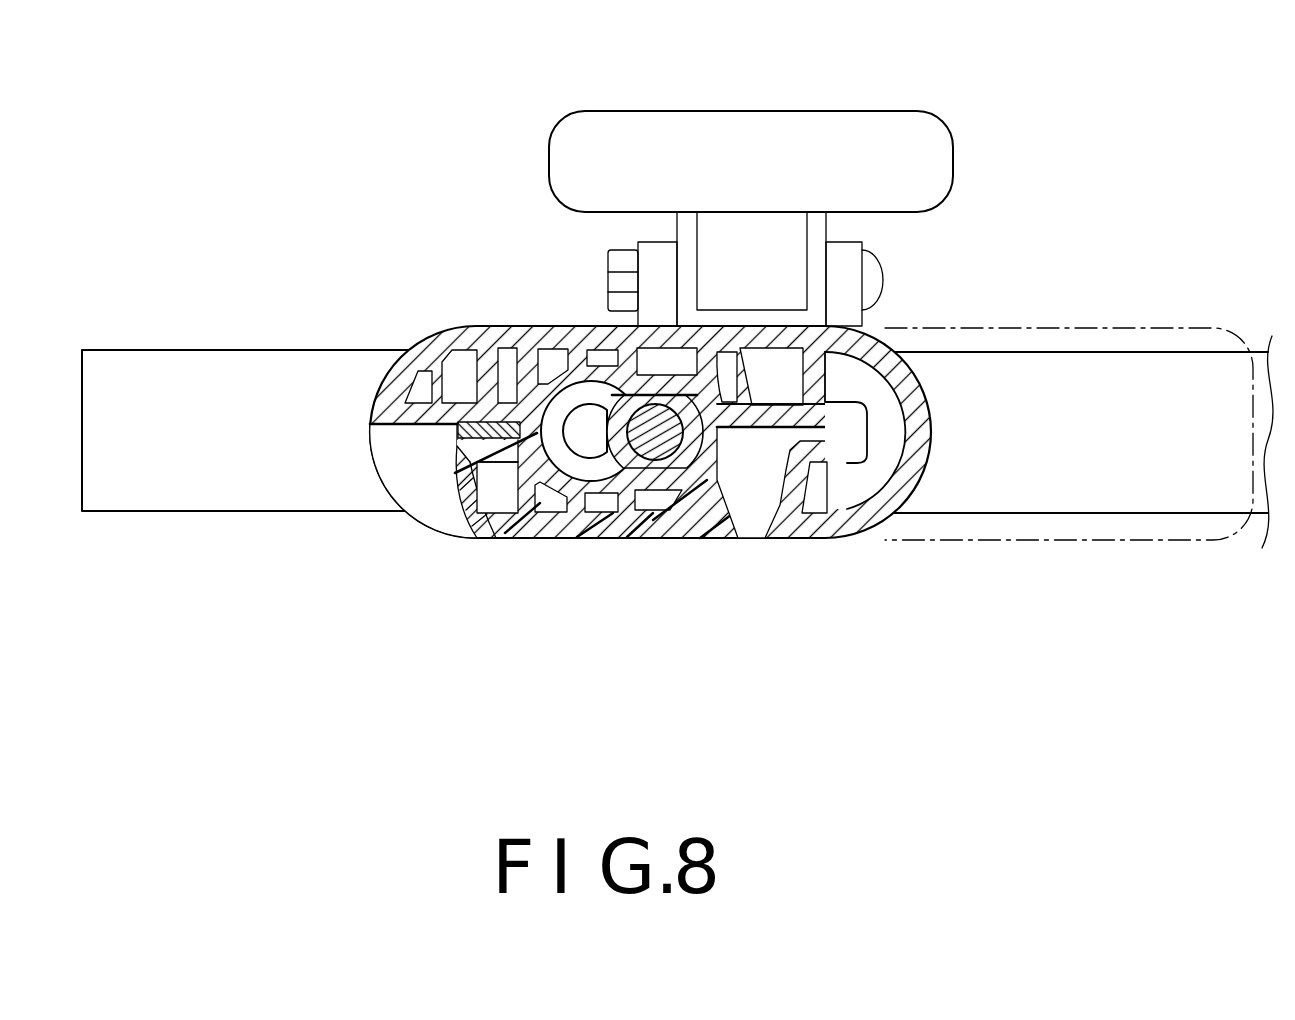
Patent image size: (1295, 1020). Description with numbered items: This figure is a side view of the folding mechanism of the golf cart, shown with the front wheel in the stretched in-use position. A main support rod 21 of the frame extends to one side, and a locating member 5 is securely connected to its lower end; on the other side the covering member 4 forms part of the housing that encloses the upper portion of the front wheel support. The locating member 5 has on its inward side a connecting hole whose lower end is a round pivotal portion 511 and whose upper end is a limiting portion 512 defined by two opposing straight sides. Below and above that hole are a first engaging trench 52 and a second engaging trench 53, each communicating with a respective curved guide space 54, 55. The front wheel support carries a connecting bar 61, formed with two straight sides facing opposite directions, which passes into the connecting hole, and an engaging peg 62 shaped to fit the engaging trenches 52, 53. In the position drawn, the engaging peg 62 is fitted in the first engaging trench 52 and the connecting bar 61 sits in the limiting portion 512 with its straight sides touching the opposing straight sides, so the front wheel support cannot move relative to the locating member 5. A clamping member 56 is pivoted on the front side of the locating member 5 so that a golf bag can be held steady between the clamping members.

The covering member 4 is at (1092, 527).
The main support rod 21 is at (291, 348).
The locating member 5 is at (547, 324).
The first engaging trench 52 is at (500, 458).
The second engaging trench 53 is at (845, 466).
The curved guide space 54 is at (457, 450).
The curved guide space 55 is at (752, 480).
The clamping member 56 is at (838, 126).
The connecting bar 61 is at (660, 470).
The engaging peg 62 is at (458, 430).
The round pivotal portion 511 is at (588, 470).
The limiting portion 512 is at (712, 453).